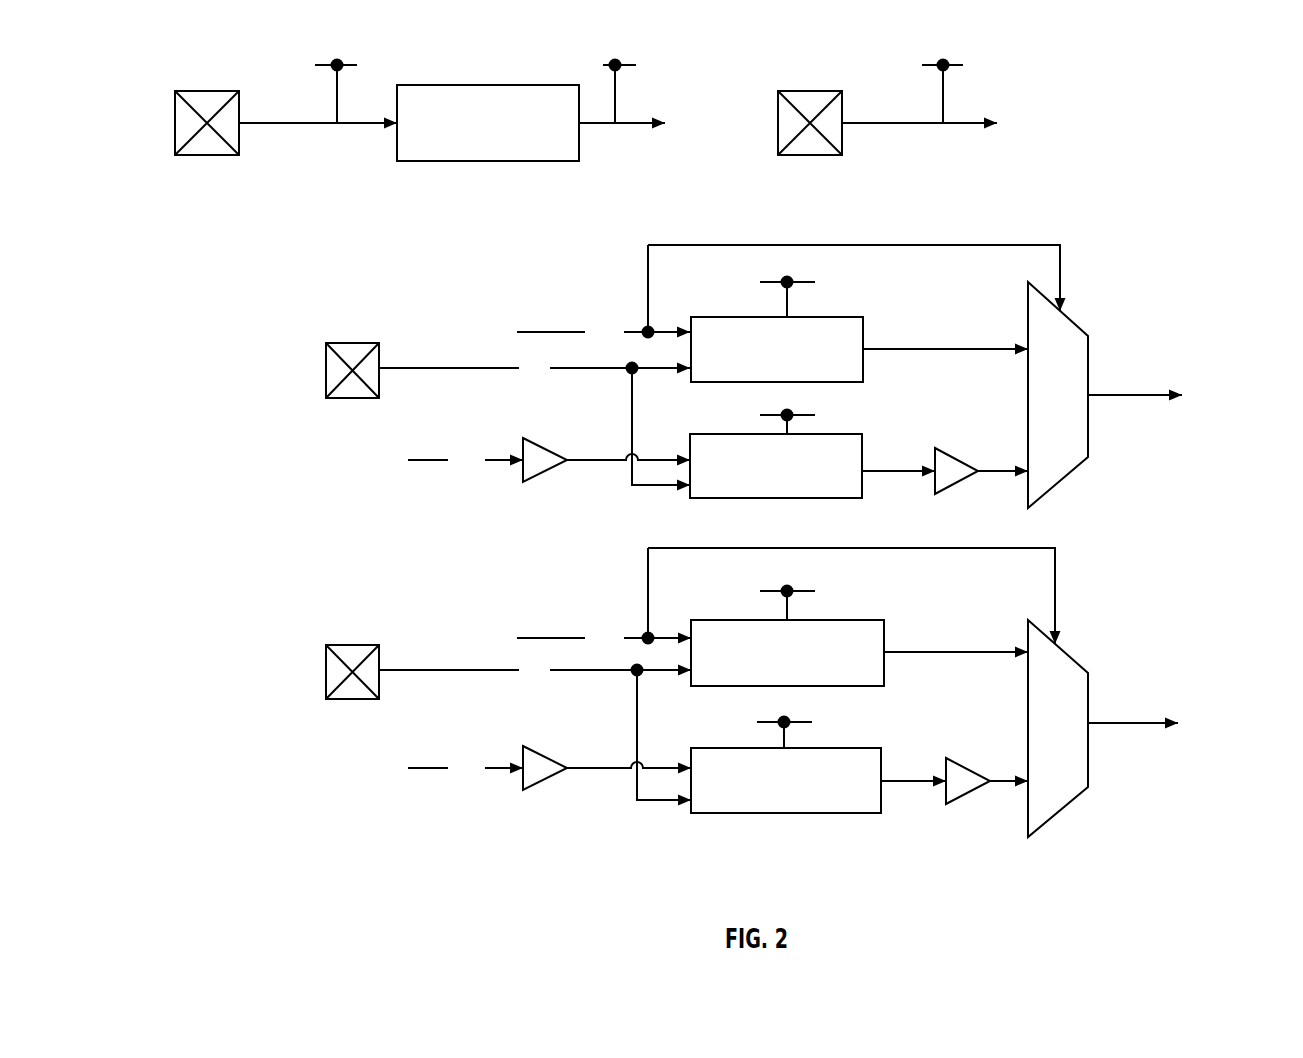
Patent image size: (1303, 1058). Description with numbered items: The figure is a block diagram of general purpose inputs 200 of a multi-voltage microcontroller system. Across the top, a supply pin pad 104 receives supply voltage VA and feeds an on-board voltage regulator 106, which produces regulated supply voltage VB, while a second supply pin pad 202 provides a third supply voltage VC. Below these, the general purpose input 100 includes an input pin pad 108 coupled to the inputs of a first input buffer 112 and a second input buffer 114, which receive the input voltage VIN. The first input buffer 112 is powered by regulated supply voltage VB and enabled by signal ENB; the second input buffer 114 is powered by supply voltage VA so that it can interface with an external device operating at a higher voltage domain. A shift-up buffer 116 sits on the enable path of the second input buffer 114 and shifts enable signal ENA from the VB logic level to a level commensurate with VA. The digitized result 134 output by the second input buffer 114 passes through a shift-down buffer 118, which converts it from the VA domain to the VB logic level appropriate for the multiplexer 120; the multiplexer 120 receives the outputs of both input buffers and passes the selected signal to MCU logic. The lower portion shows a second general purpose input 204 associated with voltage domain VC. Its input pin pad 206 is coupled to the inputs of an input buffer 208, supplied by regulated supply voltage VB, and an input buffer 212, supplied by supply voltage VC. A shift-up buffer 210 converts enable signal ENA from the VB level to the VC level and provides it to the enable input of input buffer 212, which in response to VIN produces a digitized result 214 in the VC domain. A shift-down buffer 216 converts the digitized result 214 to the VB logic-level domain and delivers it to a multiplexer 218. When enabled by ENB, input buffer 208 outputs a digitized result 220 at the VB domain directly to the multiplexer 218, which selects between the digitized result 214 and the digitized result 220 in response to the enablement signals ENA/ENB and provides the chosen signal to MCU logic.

The general purpose input 100 is at (1150, 248).
The supply pin pad 104 is at (290, 195).
The on-board voltage regulator 106 is at (545, 152).
The input pin pad 108 is at (340, 343).
The first input buffer 112 is at (795, 363).
The second input buffer 114 is at (790, 478).
The shift-up buffer 116 is at (556, 453).
The shift-down buffer 118 is at (965, 463).
The multiplexer 120 is at (1063, 475).
The digitized result 134 is at (912, 468).
The general purpose inputs 200 is at (1195, 95).
The second supply pin pad 202 is at (845, 225).
The second general purpose input 204 is at (1193, 585).
The input pin pad 206 is at (340, 645).
The input buffer 208 is at (857, 667).
The shift-up buffer 210 is at (556, 761).
The input buffer 212 is at (855, 795).
The digitized result 214 is at (922, 779).
The shift-down buffer 216 is at (977, 773).
The multiplexer 218 is at (1063, 805).
The digitized result 220 is at (984, 650).